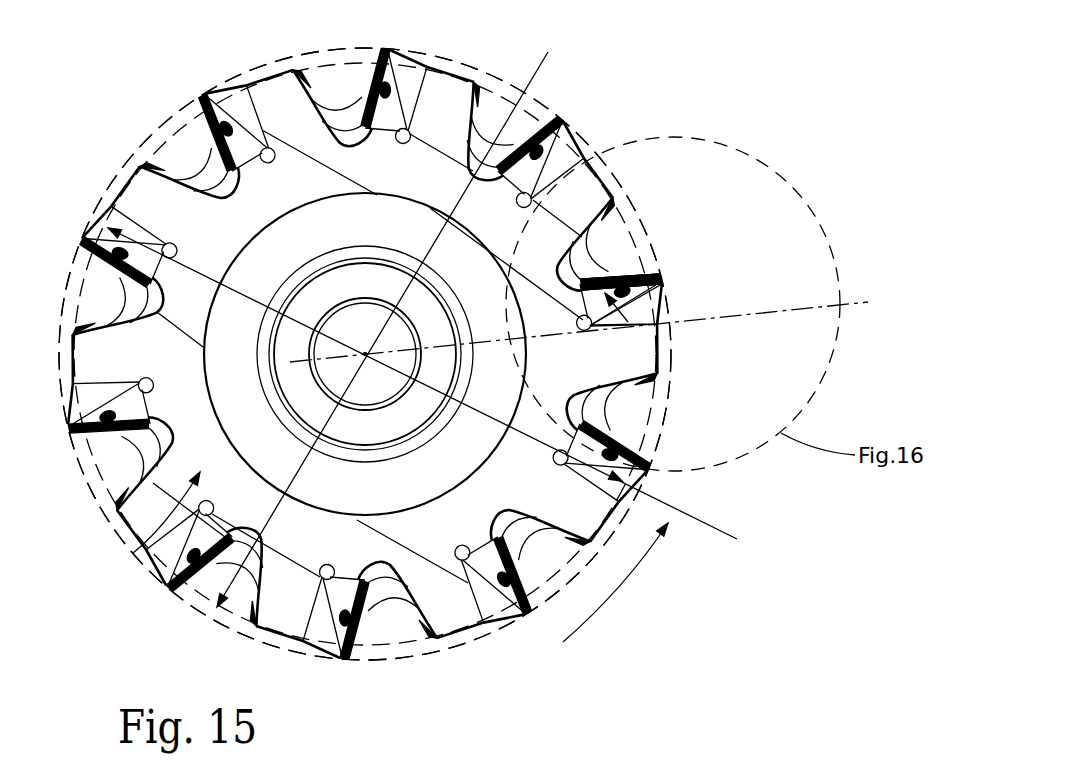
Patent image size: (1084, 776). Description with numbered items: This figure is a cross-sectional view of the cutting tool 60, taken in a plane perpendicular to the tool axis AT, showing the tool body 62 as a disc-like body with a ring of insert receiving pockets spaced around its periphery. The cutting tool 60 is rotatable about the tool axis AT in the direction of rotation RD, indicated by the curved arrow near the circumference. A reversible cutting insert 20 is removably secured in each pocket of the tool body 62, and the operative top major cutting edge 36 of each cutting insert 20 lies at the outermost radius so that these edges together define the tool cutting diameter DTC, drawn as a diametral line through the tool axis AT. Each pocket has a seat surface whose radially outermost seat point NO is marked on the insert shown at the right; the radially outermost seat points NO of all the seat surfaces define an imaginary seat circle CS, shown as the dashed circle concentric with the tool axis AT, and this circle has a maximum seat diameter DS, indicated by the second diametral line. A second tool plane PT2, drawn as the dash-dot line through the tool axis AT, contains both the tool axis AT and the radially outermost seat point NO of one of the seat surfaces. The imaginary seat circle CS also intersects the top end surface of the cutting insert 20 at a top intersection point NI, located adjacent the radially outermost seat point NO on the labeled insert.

The cutting tool 60 is at (617, 115).
The reversible cutting insert 20 is at (623, 280).
The top major cutting edge 36 is at (663, 282).
The tool body 62 is at (153, 485).
The top intersection point NI is at (663, 280).
The radially outermost seat point NO is at (665, 318).
The tool cutting diameter DTC is at (392, 321).
The second tool plane PT2 is at (606, 326).
The tool axis AT is at (366, 357).
The maximum seat diameter DS is at (448, 403).
The imaginary seat circle CS is at (577, 558).
The direction of rotation RD is at (595, 597).